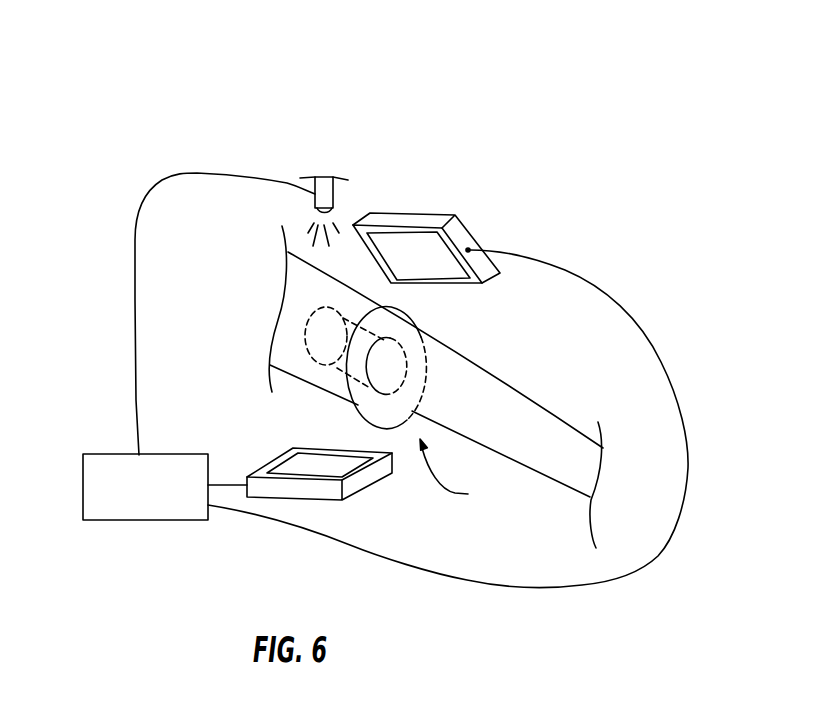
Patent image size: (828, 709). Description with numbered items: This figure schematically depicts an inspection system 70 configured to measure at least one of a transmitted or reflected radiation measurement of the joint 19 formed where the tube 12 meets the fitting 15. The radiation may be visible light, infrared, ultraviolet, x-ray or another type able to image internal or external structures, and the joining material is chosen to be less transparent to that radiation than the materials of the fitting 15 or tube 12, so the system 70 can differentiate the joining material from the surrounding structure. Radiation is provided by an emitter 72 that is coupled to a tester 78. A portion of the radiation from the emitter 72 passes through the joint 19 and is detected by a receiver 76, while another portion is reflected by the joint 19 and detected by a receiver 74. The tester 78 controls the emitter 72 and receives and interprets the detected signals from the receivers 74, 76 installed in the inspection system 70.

The inspection system 70 is at (596, 110).
The emitter 72 is at (333, 195).
The receiver 74 is at (462, 229).
The receiver 76 is at (274, 460).
The tester 78 is at (105, 453).
The fitting 15 is at (283, 351).
The tube 12 is at (485, 386).
The joint 19 is at (461, 474).